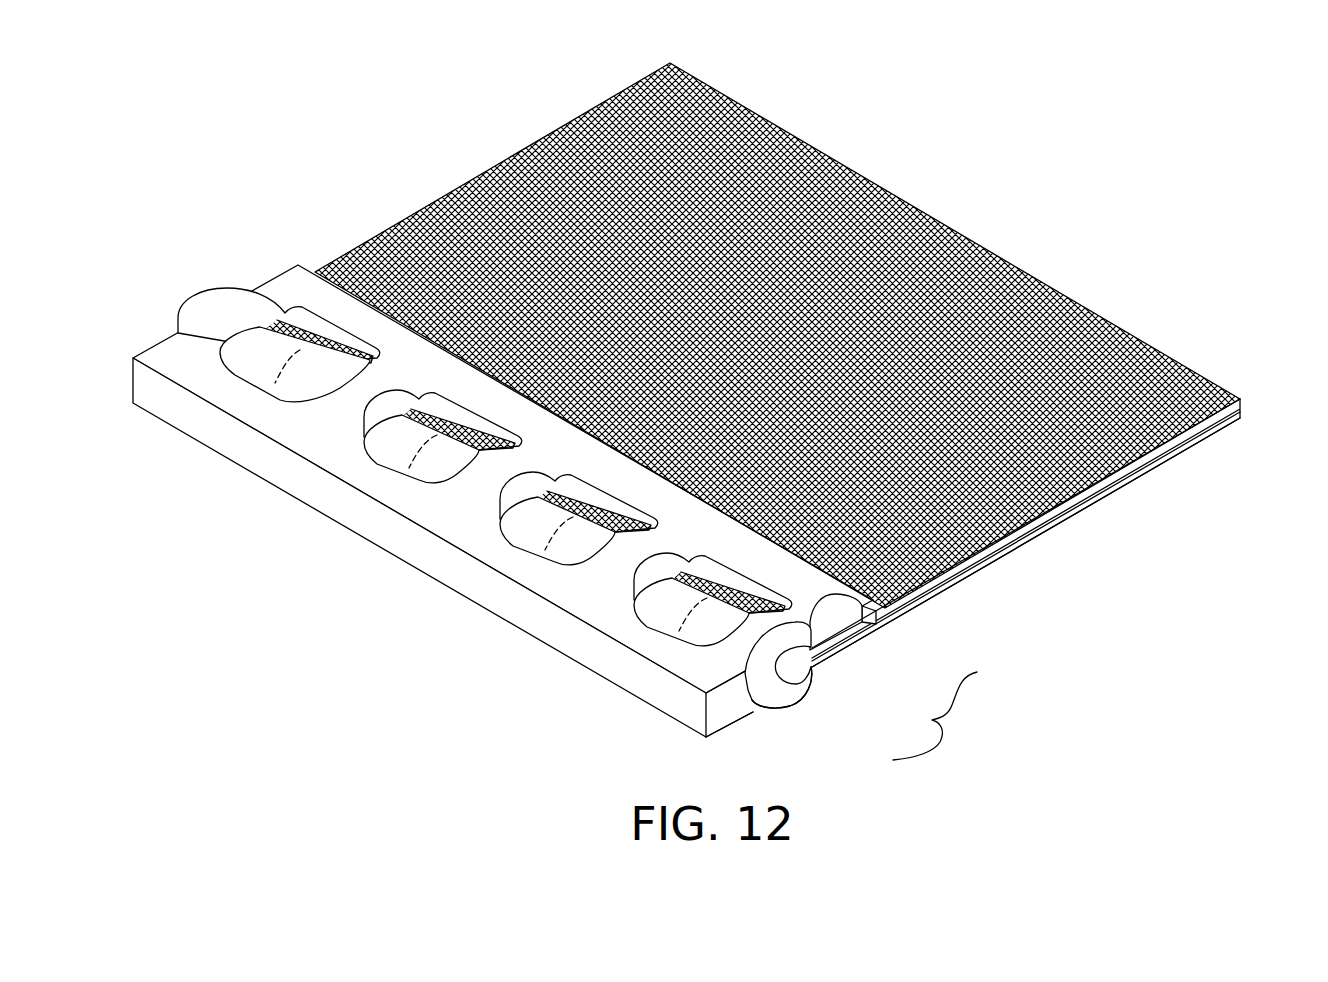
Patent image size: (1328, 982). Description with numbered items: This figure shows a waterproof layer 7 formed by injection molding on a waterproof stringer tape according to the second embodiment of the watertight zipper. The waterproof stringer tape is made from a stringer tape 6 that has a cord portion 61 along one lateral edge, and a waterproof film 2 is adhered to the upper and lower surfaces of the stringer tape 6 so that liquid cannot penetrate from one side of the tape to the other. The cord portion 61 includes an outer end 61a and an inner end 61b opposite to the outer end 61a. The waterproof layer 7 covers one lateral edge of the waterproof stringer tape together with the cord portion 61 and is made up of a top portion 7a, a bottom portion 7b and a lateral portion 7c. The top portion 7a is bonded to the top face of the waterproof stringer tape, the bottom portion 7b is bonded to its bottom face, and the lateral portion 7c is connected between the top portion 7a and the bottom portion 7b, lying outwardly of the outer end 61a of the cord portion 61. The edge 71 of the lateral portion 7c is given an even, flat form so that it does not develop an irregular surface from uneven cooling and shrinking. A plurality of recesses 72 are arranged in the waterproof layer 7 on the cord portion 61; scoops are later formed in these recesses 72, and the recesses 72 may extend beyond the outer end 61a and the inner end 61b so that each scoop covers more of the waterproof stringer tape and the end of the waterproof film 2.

The waterproof film 2 is at (1180, 373).
The stringer tape 6 is at (1233, 410).
The waterproof layer 7 is at (935, 716).
The top portion 7a is at (863, 635).
The bottom portion 7b is at (837, 657).
The lateral portion 7c is at (730, 710).
The cord portion 61 is at (777, 682).
The outer end 61a is at (717, 692).
The inner end 61b is at (868, 604).
The edge 71 is at (243, 450).
The recess 72 is at (285, 313).